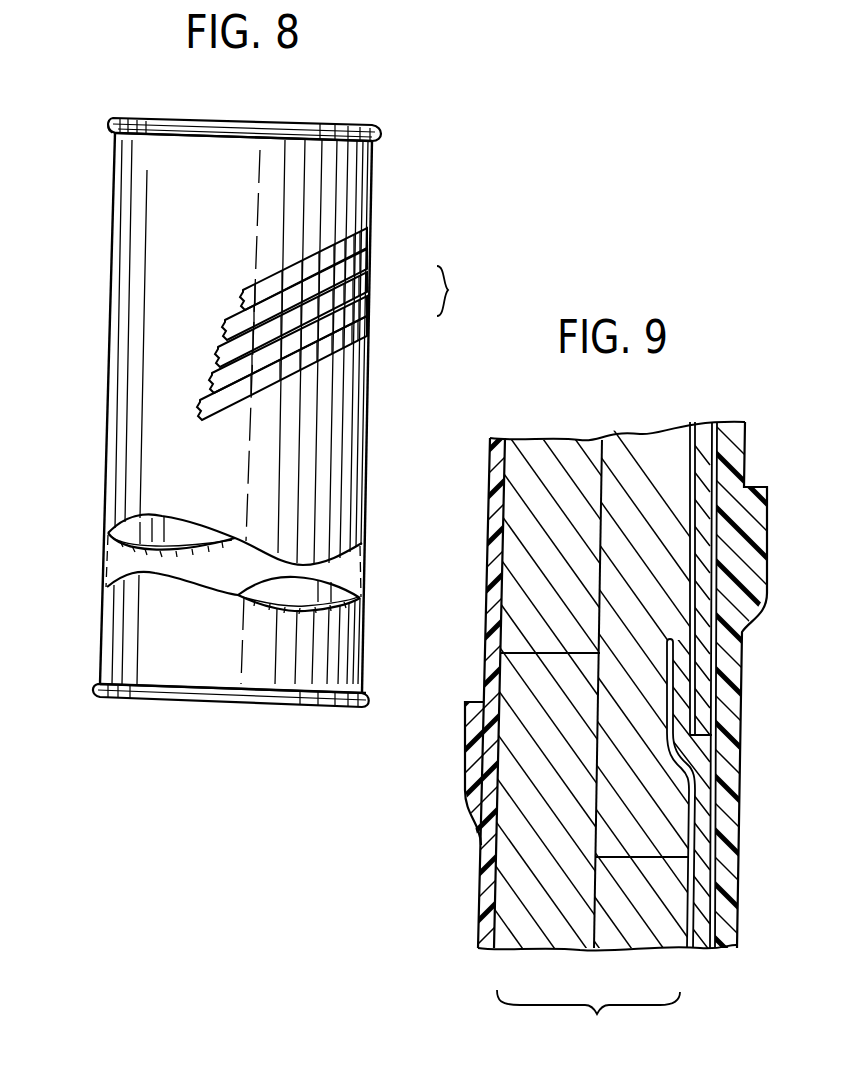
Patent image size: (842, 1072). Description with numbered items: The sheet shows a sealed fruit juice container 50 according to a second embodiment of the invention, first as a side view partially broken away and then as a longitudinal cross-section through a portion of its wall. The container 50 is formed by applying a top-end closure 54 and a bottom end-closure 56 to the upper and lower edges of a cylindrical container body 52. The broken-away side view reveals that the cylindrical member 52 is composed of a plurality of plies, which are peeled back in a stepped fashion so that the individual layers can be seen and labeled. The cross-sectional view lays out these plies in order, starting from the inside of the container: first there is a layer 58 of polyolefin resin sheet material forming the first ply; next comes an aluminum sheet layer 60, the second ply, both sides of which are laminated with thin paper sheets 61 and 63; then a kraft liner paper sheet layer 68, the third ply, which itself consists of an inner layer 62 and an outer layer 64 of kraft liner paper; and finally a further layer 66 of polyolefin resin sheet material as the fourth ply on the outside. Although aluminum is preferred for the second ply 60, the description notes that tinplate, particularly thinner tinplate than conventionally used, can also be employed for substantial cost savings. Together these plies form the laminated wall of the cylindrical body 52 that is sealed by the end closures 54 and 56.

In FIG. 8, the sealed fruit juice container 50 is at (108, 374).
In FIG. 8, the cylindrical container body 52 is at (157, 233).
In FIG. 9, the cylindrical container body 52 is at (545, 420).
In FIG. 8, the top-end closure 54 is at (322, 116).
In FIG. 8, the bottom end-closure 56 is at (240, 707).
In FIG. 8, the layer of polyolefin resin sheet material 58 is at (370, 236).
In FIG. 9, the layer of polyolefin resin sheet material 58 is at (745, 462).
In FIG. 8, the aluminum sheet layer 60 is at (370, 258).
In FIG. 9, the aluminum sheet layer 60 is at (708, 683).
In FIG. 9, the thin paper sheet 61 is at (705, 420).
In FIG. 8, the inner layer of kraft liner paper 62 is at (370, 281).
In FIG. 9, the inner layer of kraft liner paper 62 is at (645, 940).
In FIG. 9, the thin paper sheet 63 is at (720, 421).
In FIG. 8, the outer layer of kraft liner paper 64 is at (370, 305).
In FIG. 9, the outer layer of kraft liner paper 64 is at (542, 940).
In FIG. 8, the further layer of polyolefin resin sheet material 66 is at (370, 325).
In FIG. 9, the further layer of polyolefin resin sheet material 66 is at (494, 570).
In FIG. 8, the kraft liner paper sheet layer 68 is at (477, 305).
In FIG. 9, the kraft liner paper sheet layer 68 is at (609, 1046).